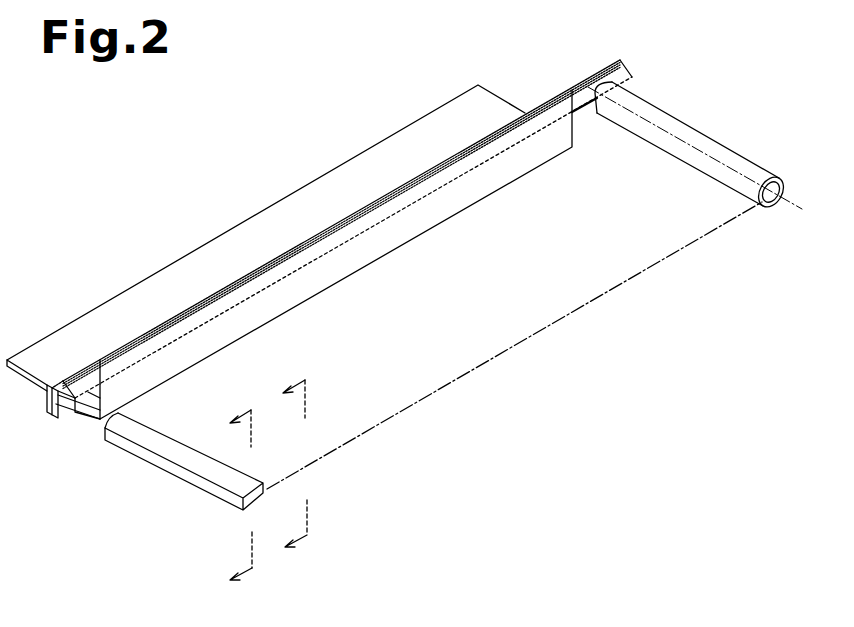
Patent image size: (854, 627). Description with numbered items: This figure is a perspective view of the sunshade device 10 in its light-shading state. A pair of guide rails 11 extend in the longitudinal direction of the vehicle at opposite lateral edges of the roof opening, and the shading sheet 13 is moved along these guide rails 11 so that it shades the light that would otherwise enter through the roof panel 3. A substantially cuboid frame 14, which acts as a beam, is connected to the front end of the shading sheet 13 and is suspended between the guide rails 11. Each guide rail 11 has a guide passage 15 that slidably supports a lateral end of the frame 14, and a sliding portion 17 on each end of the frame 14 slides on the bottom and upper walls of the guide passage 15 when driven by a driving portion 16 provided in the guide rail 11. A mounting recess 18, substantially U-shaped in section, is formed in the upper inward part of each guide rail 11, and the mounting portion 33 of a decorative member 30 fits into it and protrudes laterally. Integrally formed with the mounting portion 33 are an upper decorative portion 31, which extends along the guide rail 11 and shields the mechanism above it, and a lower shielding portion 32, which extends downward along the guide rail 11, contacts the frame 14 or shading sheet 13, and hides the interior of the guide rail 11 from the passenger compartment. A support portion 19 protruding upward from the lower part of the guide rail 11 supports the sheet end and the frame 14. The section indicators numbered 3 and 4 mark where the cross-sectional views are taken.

The sunshade device 10 is at (321, 130).
The guide rail 11 is at (266, 209).
The shading sheet 13 is at (494, 360).
The frame 14 is at (198, 487).
The guide passage 15 is at (65, 392).
The driving portion 16 is at (48, 410).
The sliding portion 17 is at (62, 420).
The mounting recess 18 is at (85, 384).
The support portion 19 is at (78, 432).
The decorative member 30 is at (326, 230).
The decorative portion 31 is at (108, 358).
The shielding portion 32 is at (98, 430).
The mounting portion 33 is at (103, 422).
The roof panel 3 is at (232, 504).
The section line 4- 4 is at (286, 473).